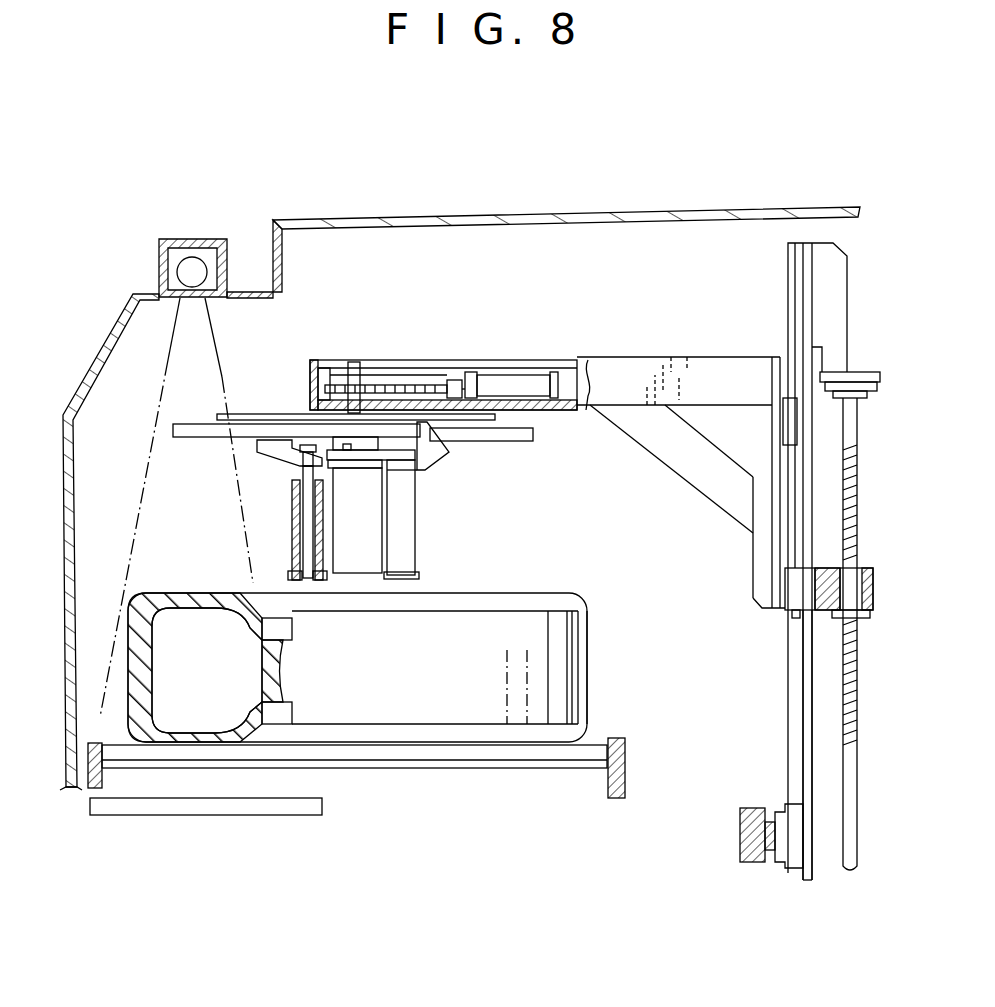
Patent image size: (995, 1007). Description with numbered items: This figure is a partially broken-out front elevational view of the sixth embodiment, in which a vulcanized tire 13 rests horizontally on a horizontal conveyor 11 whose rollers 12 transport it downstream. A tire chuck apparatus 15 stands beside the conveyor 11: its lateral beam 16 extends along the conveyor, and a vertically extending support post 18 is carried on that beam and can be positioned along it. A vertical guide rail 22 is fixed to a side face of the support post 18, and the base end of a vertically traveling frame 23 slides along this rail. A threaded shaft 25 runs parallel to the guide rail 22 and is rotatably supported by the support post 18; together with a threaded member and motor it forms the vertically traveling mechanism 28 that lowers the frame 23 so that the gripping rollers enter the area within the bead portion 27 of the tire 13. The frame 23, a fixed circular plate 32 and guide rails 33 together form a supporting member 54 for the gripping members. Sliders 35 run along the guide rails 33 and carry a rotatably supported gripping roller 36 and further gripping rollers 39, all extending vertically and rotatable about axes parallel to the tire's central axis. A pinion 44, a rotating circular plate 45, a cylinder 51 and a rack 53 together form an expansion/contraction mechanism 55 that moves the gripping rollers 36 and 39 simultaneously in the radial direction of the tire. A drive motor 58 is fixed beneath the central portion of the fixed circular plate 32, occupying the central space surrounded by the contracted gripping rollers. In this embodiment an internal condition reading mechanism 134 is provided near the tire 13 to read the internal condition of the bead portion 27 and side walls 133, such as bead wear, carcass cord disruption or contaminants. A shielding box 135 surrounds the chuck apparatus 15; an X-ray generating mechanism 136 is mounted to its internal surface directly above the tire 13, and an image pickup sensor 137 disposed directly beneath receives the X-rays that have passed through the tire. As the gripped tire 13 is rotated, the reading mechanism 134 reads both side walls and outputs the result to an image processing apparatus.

The horizontal conveyor 11 is at (594, 722).
The rollers 12 is at (505, 762).
The vulcanized tire 13 is at (547, 590).
The tire chuck apparatus 15 is at (586, 318).
The lateral beam 16 is at (752, 850).
The support post 18 is at (818, 727).
The guide rail 22 is at (788, 286).
The vertically traveling frame 23 is at (612, 372).
The threaded shaft 25 is at (858, 706).
The bead portion 27 is at (250, 630).
The vertically traveling mechanism 28 is at (870, 360).
The fixed circular plate 32 is at (200, 426).
The guide rails 33 is at (490, 442).
The sliders 35 is at (270, 452).
The gripping roller 36 is at (398, 526).
The gripping rollers 39 is at (290, 520).
The pinion 44 is at (376, 362).
The rotating circular plate 45 is at (270, 414).
The cylinder 51 is at (528, 380).
The rack 53 is at (431, 385).
The supporting member 54 is at (482, 332).
The expansion/contraction mechanism 55 is at (413, 358).
The drive motor 58 is at (363, 557).
The side walls 133 is at (206, 600).
The internal condition reading mechanism 134 is at (296, 273).
The shielding box 135 is at (572, 210).
The X-ray generating mechanism 136 is at (198, 258).
The image pickup sensor 137 is at (258, 815).